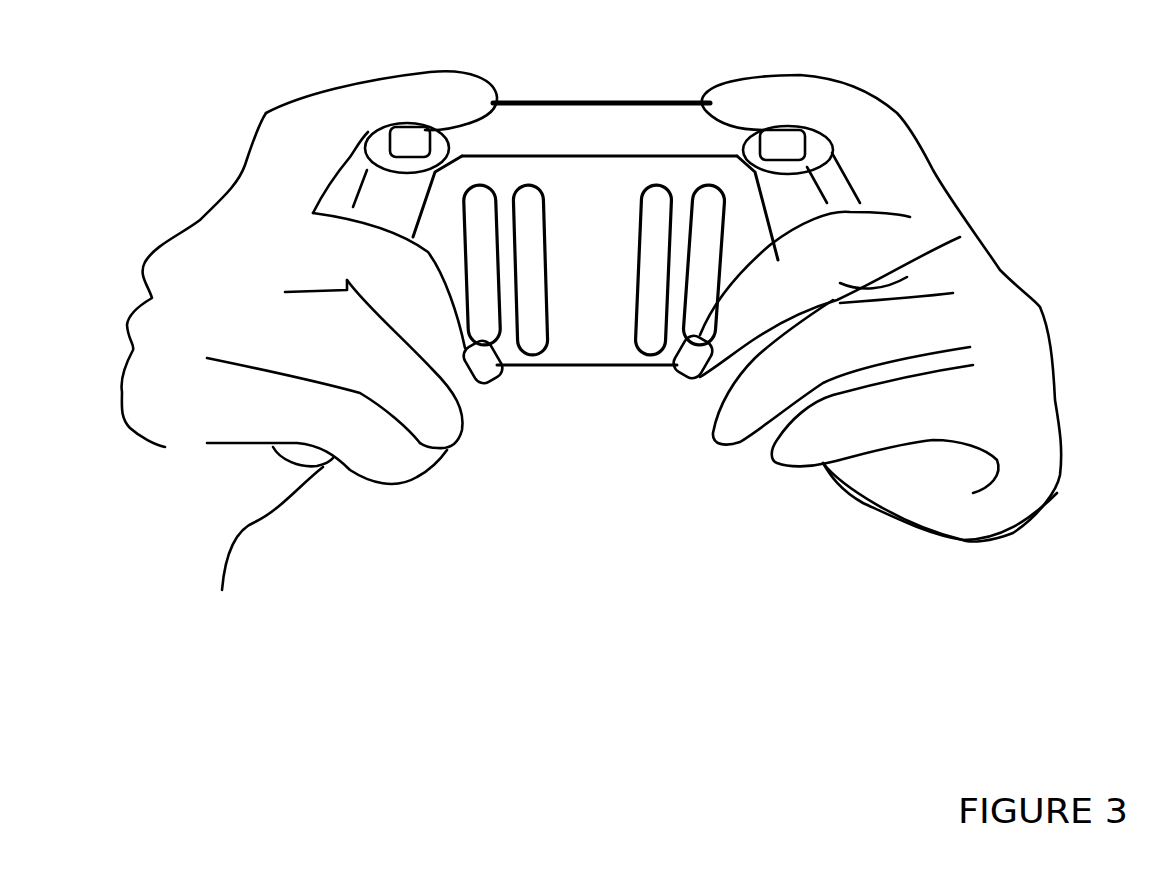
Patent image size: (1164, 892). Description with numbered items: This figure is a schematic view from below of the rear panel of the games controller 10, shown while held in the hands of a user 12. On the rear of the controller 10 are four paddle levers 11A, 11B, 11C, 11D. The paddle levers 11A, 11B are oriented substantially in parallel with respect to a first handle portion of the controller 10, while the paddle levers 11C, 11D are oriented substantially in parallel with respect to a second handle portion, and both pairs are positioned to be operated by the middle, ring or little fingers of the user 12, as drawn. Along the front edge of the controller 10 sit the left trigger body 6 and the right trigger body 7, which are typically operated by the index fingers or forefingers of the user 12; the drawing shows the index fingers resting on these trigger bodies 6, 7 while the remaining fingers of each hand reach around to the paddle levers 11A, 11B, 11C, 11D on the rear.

The controller 10 is at (607, 105).
The paddle lever 11A is at (491, 348).
The paddle lever 11B is at (540, 307).
The paddle lever 11C is at (658, 305).
The paddle lever 11D is at (708, 238).
The right trigger body 7 is at (403, 137).
The left trigger body 6 is at (788, 137).
The user 12 is at (415, 287).